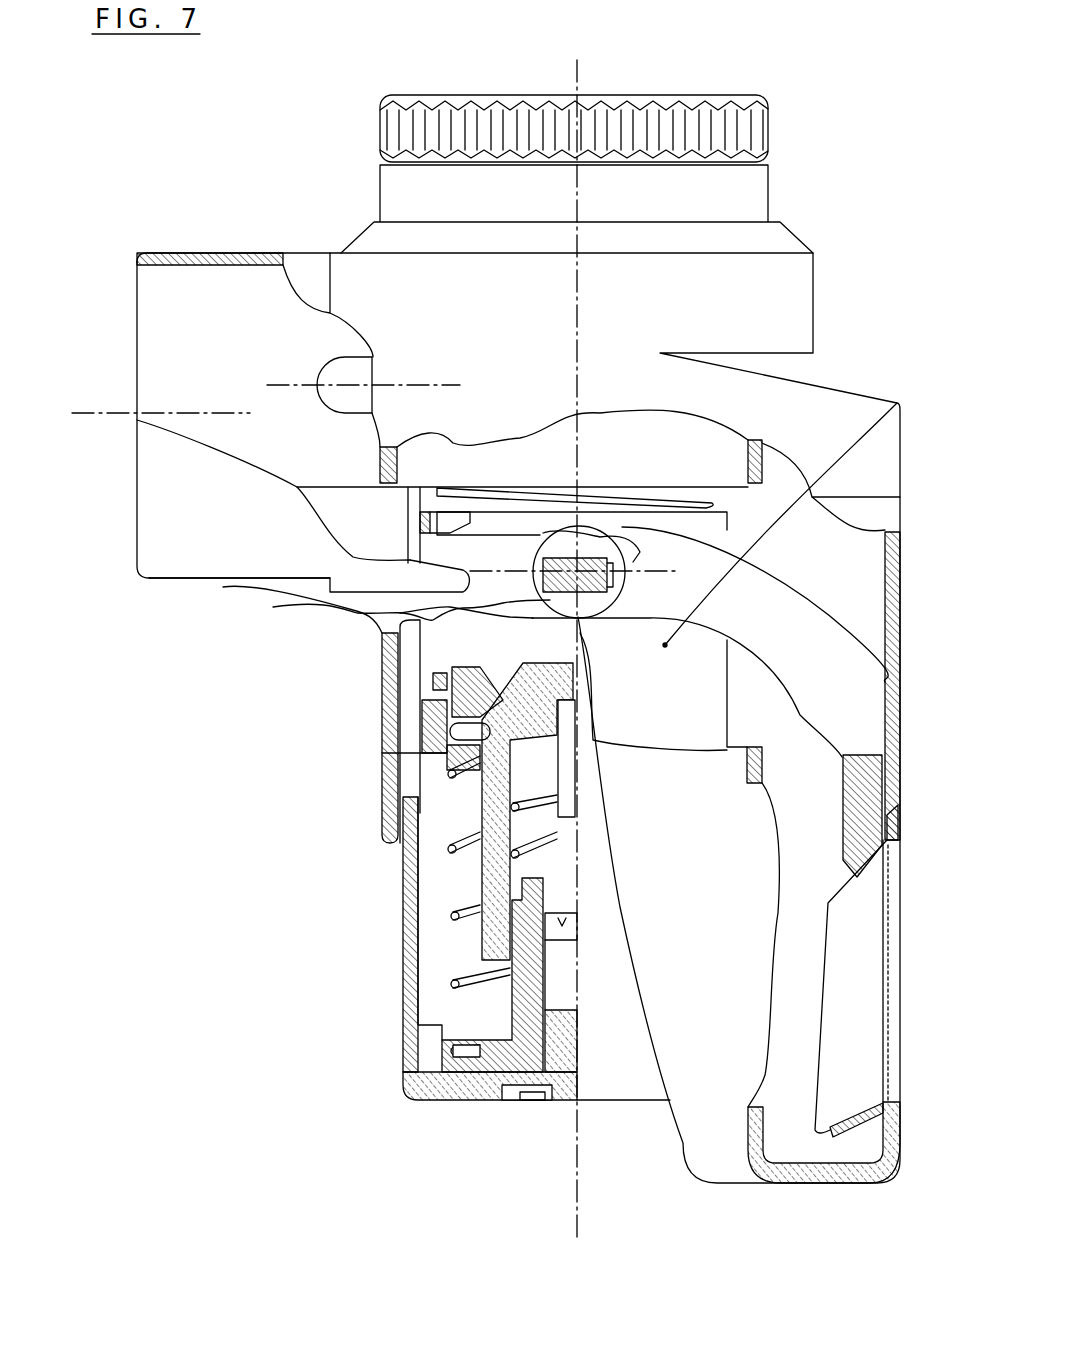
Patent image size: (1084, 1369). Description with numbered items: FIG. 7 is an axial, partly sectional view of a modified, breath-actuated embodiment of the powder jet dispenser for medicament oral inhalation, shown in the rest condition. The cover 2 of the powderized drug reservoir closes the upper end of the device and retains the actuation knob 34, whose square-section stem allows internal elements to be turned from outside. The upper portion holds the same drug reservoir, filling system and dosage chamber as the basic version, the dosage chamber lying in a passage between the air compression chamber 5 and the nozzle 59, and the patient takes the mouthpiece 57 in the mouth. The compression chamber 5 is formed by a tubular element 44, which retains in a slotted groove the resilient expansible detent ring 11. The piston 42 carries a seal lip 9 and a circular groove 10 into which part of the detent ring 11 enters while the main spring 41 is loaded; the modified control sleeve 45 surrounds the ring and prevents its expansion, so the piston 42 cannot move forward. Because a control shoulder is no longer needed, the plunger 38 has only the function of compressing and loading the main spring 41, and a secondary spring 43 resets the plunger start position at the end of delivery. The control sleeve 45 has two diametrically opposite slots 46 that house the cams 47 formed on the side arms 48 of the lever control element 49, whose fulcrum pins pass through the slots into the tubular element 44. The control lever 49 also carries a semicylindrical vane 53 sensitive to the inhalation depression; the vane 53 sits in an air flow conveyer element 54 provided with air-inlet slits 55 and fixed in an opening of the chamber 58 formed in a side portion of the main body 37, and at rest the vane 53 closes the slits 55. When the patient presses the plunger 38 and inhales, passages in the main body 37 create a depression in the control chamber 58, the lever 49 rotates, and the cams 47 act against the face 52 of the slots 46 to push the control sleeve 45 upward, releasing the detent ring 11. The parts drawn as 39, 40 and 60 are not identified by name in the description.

The cover 2 is at (400, 192).
The actuation knob 34 is at (430, 125).
The face of the slots 52 is at (588, 572).
The cams 47 is at (607, 570).
The main body 37 is at (752, 450).
The special slots 46 is at (613, 567).
The control sleeve 45 is at (898, 404).
The side arms 48 is at (777, 620).
The lever control element 49 is at (857, 780).
The air flow conveyer element 54 is at (892, 813).
The slits 55 is at (890, 903).
The nozzle 59 is at (330, 378).
The mouthpiece 57 is at (155, 537).
The compression chamber 5 is at (223, 587).
The seal lip 9 is at (273, 607).
The tubular element 44 is at (430, 703).
The resilient expansible detent ring 11 is at (382, 725).
The circular groove 10 is at (400, 753).
The piston 42 is at (388, 797).
The main spring 41 is at (453, 913).
The secondary spring 43 is at (512, 903).
The guide block 39 is at (523, 1002).
The plunger 38 is at (433, 1090).
The bottom opening 40 is at (555, 1103).
The switch contact 60 is at (562, 925).
The control chamber 58 is at (788, 1023).
The semicylindrical vane 53 is at (850, 1060).